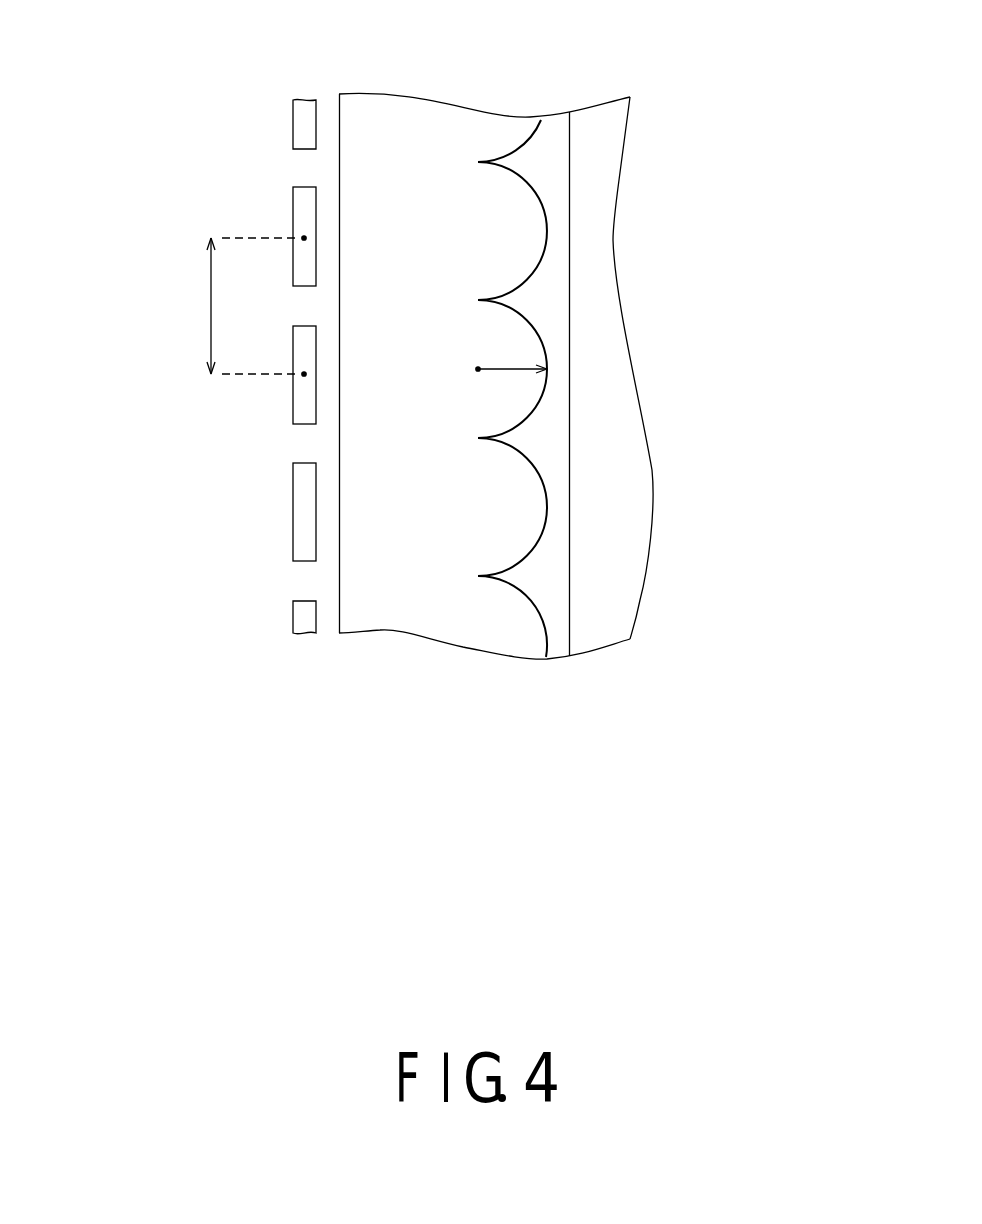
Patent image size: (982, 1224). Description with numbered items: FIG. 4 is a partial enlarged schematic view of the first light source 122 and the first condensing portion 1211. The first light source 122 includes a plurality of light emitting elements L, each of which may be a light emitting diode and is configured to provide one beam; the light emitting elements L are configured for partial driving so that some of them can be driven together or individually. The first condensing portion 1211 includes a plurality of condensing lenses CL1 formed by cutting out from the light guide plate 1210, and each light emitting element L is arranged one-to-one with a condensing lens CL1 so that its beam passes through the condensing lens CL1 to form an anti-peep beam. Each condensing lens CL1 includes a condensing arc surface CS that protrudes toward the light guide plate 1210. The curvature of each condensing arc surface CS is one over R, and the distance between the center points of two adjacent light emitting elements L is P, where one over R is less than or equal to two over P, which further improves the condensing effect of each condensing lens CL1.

The light guide plate 1210 is at (607, 543).
The condensing lens CL1 is at (512, 329).
The first condensing portion 1211 is at (505, 197).
The condensing arc surface CS is at (548, 253).
The radius of curvature of the condensing arc surface R is at (512, 370).
The light emitting element L is at (187, 366).
The first light source 122 is at (303, 209).
The distance between two adjacent light emitting elements P is at (240, 306).